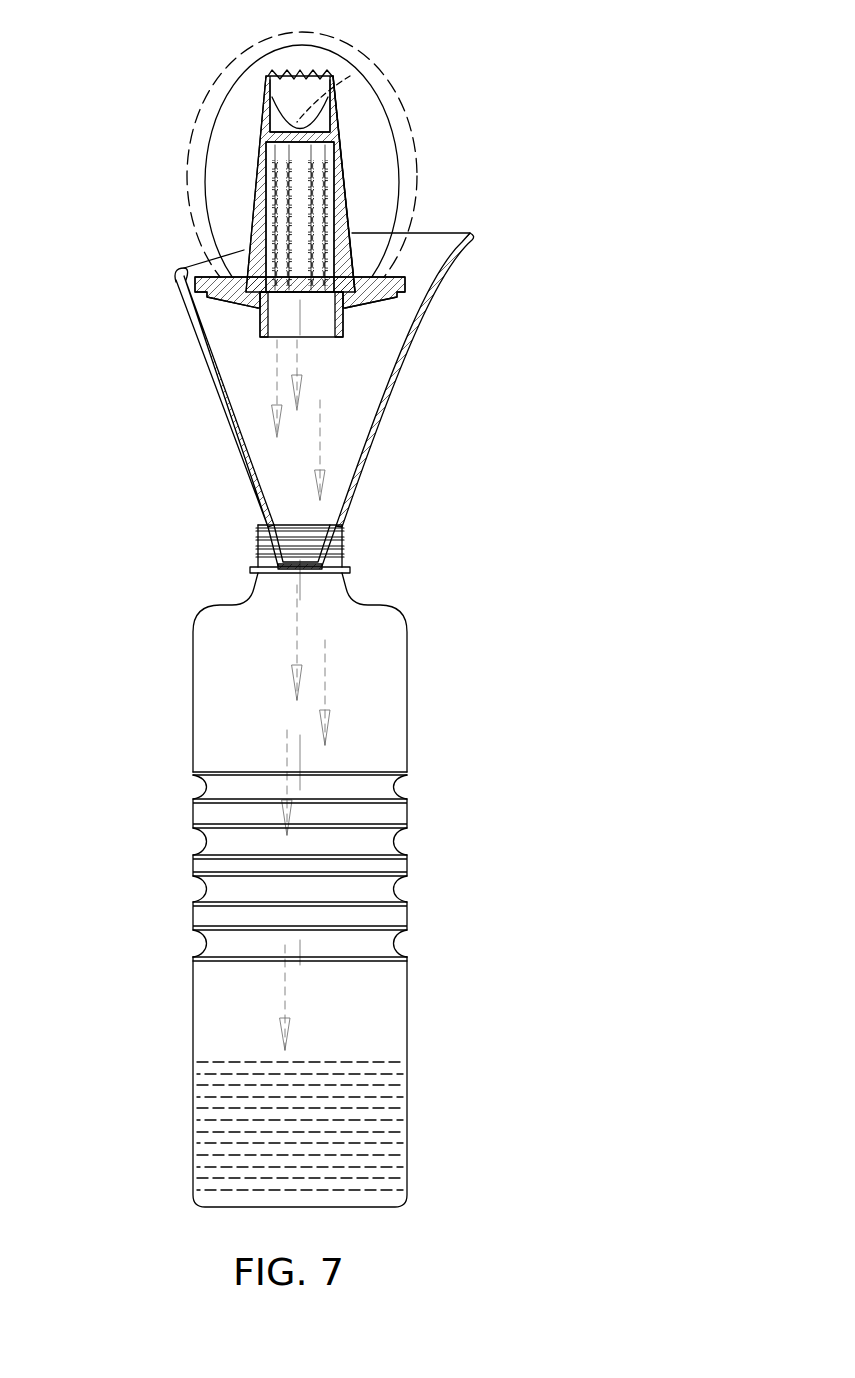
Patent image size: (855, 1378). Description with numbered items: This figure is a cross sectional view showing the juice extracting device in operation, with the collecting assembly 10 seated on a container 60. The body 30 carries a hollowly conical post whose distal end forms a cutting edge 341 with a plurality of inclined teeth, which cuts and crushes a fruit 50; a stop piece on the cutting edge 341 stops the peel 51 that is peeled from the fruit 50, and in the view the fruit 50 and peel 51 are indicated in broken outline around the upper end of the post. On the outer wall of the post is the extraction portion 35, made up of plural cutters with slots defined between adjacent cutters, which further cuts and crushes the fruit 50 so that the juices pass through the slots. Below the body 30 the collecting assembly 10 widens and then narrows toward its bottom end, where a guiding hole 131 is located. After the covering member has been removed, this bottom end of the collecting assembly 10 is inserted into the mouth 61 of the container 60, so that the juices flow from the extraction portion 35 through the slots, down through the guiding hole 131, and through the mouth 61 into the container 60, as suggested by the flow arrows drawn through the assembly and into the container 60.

The collecting assembly 10 is at (392, 404).
The guiding hole 131 is at (320, 528).
The body 30 is at (263, 156).
The cutting edge 341 is at (268, 88).
The extraction portion 35 is at (388, 184).
The fruit 50 is at (405, 185).
The peel 51 is at (350, 76).
The container 60 is at (361, 866).
The mouth 61 is at (337, 543).